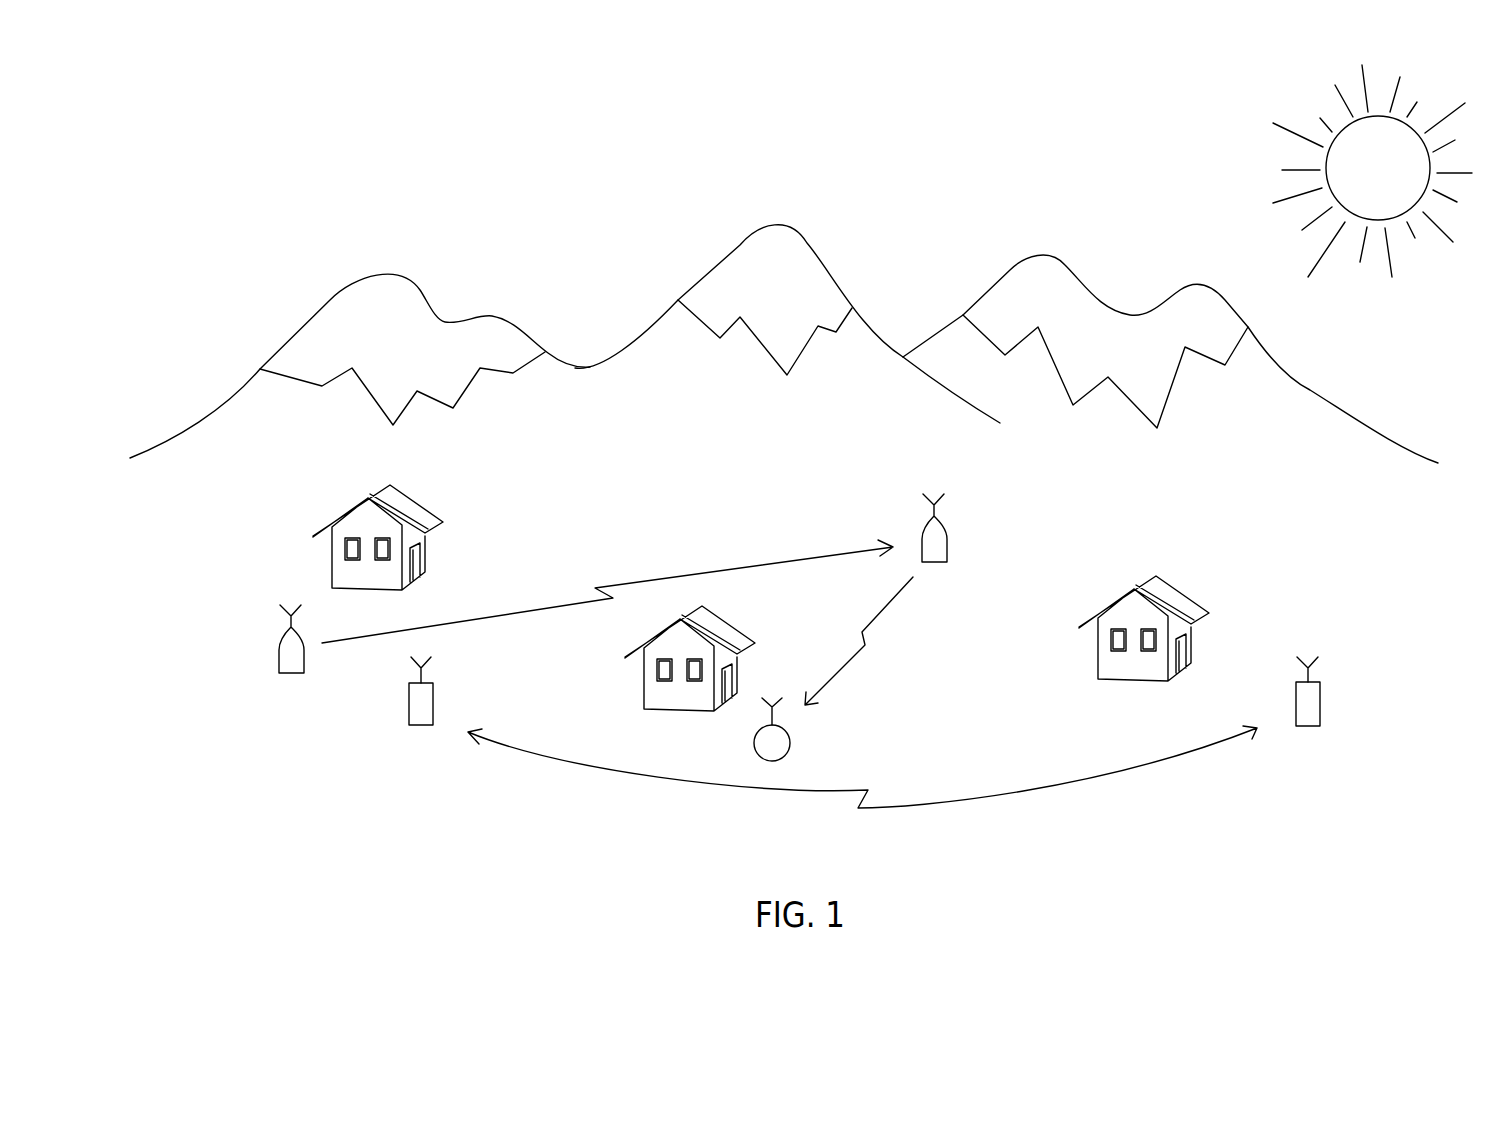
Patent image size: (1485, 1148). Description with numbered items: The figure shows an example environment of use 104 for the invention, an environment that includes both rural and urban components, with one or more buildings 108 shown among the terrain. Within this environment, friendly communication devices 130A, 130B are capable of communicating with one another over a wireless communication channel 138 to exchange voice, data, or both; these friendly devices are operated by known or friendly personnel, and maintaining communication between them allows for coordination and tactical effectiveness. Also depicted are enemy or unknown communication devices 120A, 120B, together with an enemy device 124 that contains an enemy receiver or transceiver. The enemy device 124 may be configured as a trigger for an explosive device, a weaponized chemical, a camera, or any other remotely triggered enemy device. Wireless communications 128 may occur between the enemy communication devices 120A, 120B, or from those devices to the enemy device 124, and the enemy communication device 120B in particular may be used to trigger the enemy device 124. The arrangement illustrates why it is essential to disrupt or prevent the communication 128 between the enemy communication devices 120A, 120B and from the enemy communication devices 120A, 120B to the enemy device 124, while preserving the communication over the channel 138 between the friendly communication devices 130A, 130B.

The environment of use 104 is at (473, 206).
The building 108 is at (407, 507).
The enemy communication device 120A is at (279, 653).
The enemy communication device 120B is at (947, 542).
The enemy device 124 is at (790, 750).
The wireless communications 128 is at (667, 577).
The friendly communication device 130A is at (1320, 702).
The friendly communication device 130B is at (409, 705).
The wireless communication channel 138 is at (977, 800).